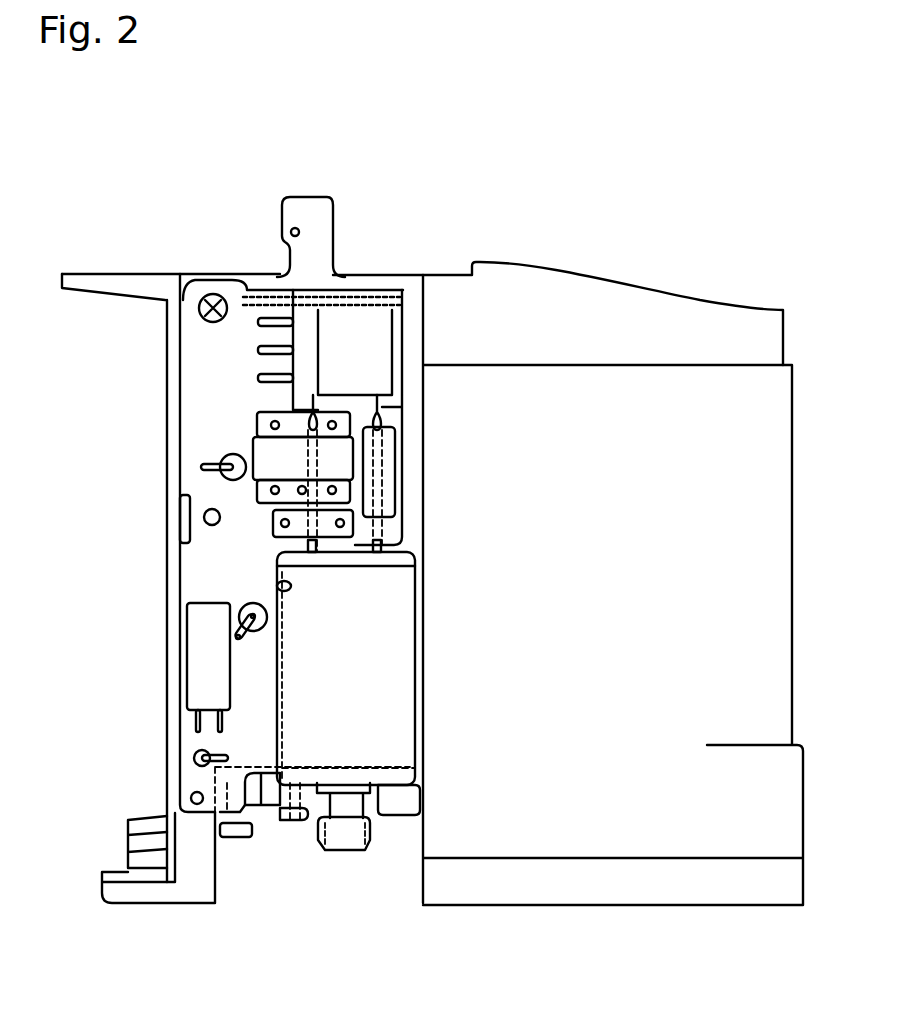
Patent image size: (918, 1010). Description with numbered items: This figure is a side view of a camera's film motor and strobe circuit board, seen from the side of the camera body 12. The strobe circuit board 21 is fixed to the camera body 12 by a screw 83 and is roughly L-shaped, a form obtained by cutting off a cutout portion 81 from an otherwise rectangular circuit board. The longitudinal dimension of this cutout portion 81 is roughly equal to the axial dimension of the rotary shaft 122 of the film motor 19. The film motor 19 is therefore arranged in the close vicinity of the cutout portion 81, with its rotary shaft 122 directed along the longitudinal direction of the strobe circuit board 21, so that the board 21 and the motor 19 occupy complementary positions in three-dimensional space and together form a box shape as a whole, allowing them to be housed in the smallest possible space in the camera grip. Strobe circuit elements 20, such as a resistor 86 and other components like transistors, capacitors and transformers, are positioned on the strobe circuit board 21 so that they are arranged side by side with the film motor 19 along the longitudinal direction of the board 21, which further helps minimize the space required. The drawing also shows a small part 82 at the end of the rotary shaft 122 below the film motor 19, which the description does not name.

The camera body 12 is at (188, 830).
The film motor 19 is at (403, 628).
The strobe circuit elements 20 is at (327, 462).
The strobe circuit board 21 is at (195, 404).
The cutout portion 81 is at (277, 581).
The pinion gear 82 is at (373, 837).
The screw 83 is at (198, 311).
The resistor 86 is at (222, 454).
The rotary shaft 122 is at (357, 808).